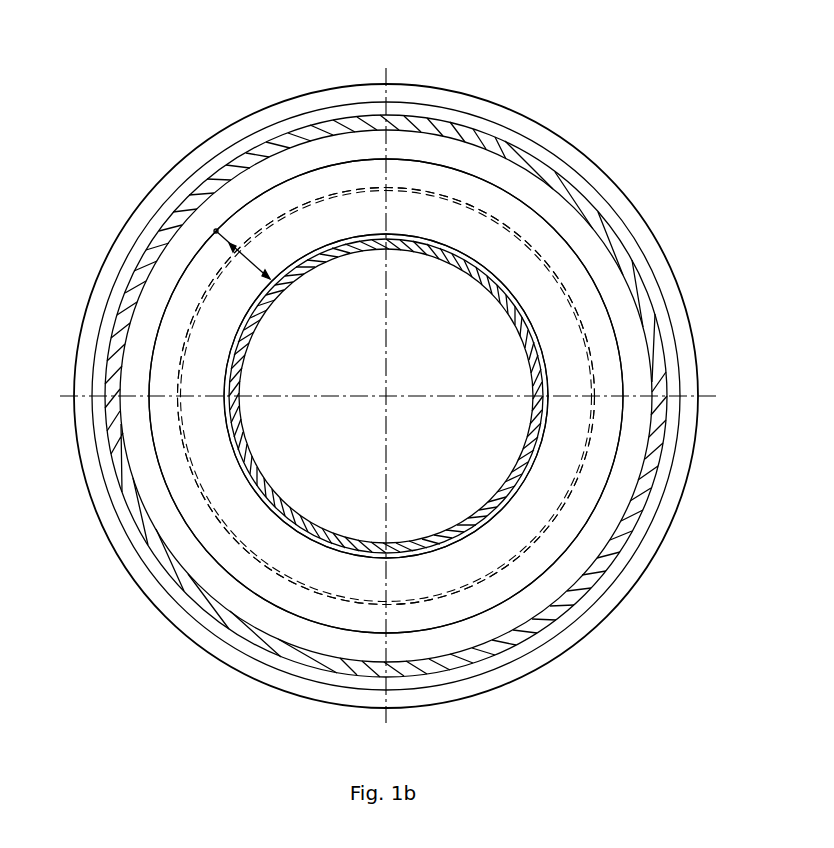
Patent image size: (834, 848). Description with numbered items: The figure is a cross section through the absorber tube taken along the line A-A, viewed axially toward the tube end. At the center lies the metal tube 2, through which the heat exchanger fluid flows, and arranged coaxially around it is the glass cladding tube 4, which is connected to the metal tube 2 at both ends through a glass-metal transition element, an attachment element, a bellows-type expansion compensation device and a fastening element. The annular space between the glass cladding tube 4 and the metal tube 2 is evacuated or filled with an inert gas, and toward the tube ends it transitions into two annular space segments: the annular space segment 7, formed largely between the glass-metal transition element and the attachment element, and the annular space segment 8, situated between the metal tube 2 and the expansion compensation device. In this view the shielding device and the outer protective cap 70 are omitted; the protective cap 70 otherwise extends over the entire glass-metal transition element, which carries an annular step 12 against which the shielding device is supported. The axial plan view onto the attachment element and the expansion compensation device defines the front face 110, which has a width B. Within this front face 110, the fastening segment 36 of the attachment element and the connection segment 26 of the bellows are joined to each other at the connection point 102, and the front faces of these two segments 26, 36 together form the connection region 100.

The metal tube 2 is at (543, 452).
The glass cladding tube 4 is at (557, 180).
The annular space segment 7 is at (434, 158).
The annular space segment 8 is at (228, 268).
The annular step 12 is at (612, 207).
The connection segment 26 is at (352, 190).
The fastening segment 36 is at (477, 193).
The outer protective cap 70 is at (678, 283).
The connection region 100 is at (313, 197).
The connection point 102 is at (300, 207).
The front face 110 is at (227, 490).